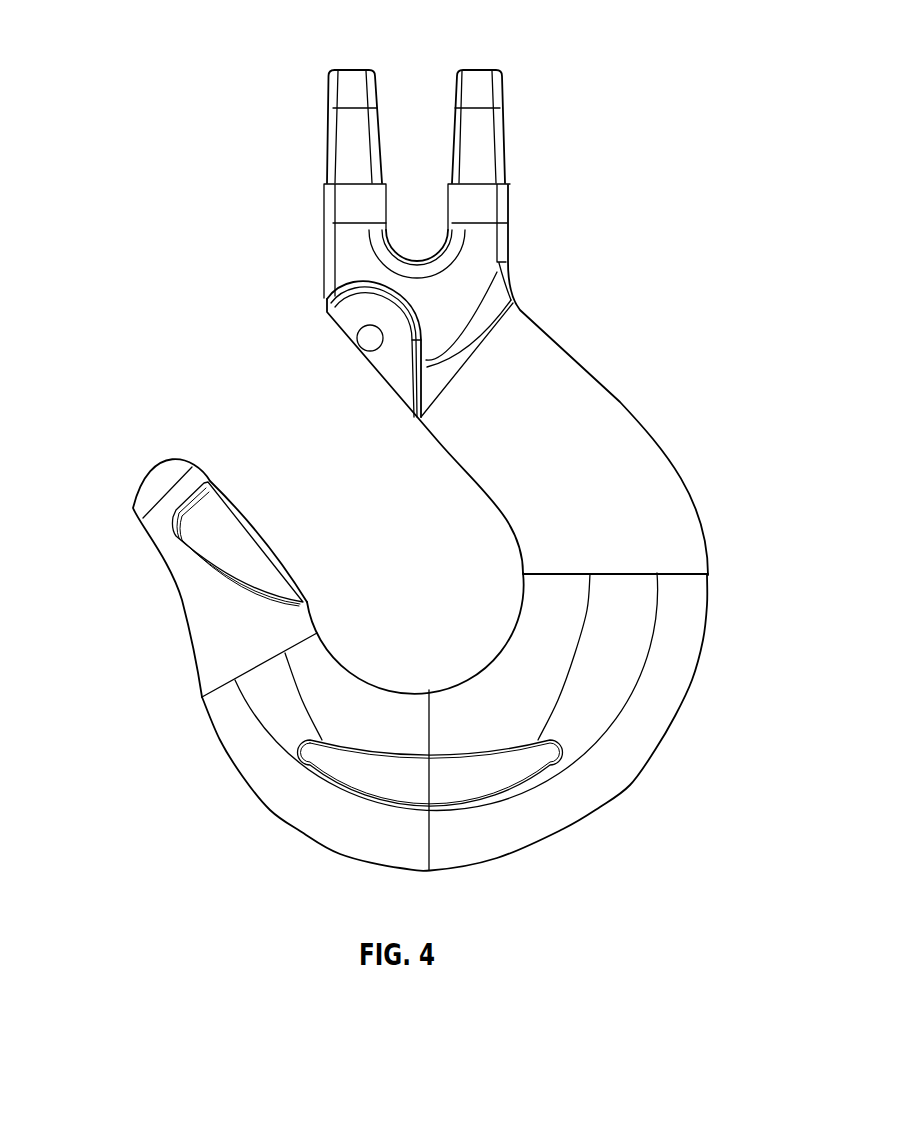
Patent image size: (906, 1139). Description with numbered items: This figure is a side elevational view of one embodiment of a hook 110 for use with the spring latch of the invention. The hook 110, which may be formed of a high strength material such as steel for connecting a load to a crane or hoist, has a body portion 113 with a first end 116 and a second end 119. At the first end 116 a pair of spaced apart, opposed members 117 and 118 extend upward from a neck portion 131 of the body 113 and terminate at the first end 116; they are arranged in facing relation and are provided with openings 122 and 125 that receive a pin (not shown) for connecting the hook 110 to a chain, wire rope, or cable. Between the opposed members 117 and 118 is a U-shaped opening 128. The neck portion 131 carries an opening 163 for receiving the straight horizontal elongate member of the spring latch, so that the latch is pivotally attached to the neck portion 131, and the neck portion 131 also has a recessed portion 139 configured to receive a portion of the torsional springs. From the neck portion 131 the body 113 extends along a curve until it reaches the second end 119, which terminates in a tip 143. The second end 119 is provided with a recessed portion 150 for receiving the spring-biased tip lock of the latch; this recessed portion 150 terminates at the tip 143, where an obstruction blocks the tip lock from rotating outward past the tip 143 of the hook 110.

The hook 110 is at (562, 46).
The body portion 113 is at (677, 752).
The first end 116 is at (490, 360).
The opposed member 117 is at (357, 69).
The opposed member 118 is at (478, 69).
The second end 119 is at (127, 546).
The opening 122 is at (326, 132).
The opening 125 is at (505, 105).
The U-shaped opening 128 is at (394, 155).
The neck portion 131 is at (561, 501).
The recessed portion 139 is at (393, 363).
The tip 143 is at (142, 473).
The recessed portion 150 is at (230, 537).
The opening 163 is at (362, 338).